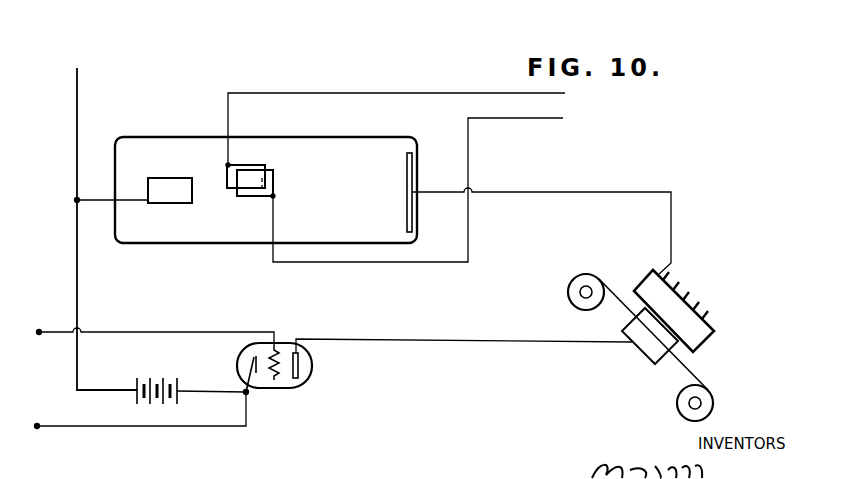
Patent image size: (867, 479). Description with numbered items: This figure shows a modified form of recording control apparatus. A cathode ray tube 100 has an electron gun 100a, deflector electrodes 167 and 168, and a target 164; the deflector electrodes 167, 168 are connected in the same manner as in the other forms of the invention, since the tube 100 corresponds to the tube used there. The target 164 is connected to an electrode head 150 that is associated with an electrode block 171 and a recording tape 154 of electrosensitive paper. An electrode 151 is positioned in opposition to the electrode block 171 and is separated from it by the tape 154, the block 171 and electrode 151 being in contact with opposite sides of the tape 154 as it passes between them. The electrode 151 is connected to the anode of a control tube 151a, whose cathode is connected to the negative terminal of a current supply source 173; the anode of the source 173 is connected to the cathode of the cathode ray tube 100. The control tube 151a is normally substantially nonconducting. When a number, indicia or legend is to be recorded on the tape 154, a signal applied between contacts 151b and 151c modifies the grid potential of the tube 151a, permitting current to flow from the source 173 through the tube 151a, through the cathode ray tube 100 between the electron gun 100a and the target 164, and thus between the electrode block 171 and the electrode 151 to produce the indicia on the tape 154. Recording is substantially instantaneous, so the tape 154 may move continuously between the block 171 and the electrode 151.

The cathode ray tube 100 is at (366, 149).
The electron gun 100a is at (157, 178).
The deflector electrode 168 is at (252, 170).
The deflector electrode 167 is at (274, 184).
The target 164 is at (413, 178).
The recording tape 154 is at (614, 291).
The electrode head 150 is at (716, 334).
The electrode 151 is at (650, 358).
The electrode block 171 is at (670, 346).
The control tube 151a is at (307, 384).
The current supply source 173 is at (164, 385).
The contact 151b is at (39, 334).
The contact 151c is at (37, 428).